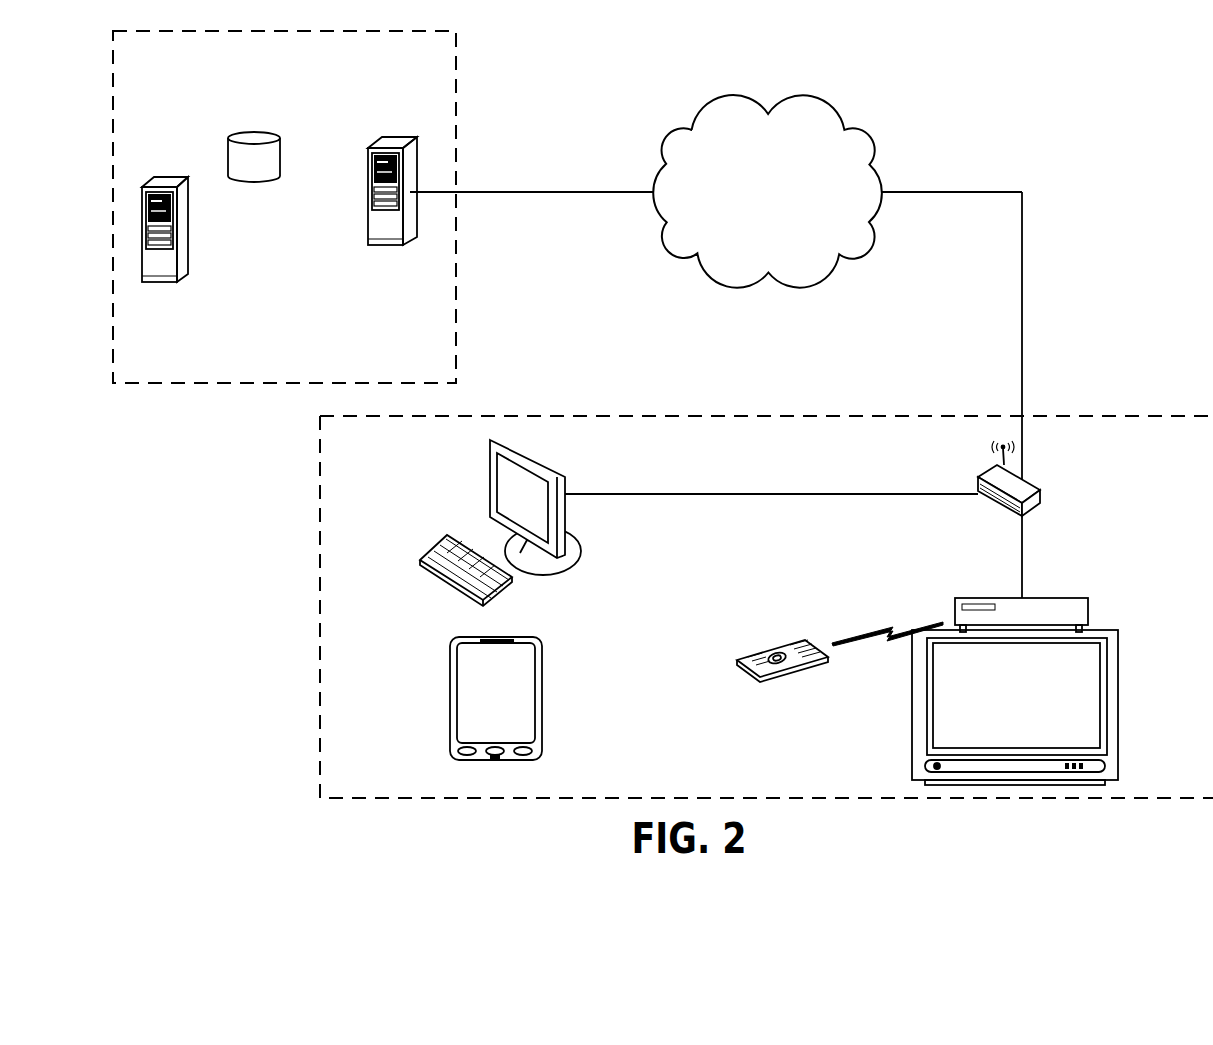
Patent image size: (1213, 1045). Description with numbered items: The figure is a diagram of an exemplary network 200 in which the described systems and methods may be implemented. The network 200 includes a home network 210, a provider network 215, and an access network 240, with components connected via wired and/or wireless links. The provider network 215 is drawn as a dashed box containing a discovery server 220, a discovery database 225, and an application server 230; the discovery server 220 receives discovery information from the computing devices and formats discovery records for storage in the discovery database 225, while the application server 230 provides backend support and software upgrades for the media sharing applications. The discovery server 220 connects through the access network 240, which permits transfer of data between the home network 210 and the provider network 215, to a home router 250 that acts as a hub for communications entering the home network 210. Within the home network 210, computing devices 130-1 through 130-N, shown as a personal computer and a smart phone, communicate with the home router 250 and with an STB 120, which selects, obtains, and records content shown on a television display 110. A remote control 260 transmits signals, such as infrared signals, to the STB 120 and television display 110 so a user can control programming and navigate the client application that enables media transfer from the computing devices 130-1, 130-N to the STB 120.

The network 200 is at (1086, 83).
The provider network 215 is at (456, 80).
The discovery database 225 is at (243, 131).
The discovery server 220 is at (378, 143).
The application server 230 is at (185, 281).
The access network 240 is at (785, 226).
The home network 210 is at (790, 416).
The computing device 130-1 is at (490, 470).
The computing device 130-N is at (450, 694).
The home router 250 is at (1030, 477).
The STB 120 is at (960, 598).
The television display 110 is at (1118, 683).
The remote control 260 is at (764, 648).